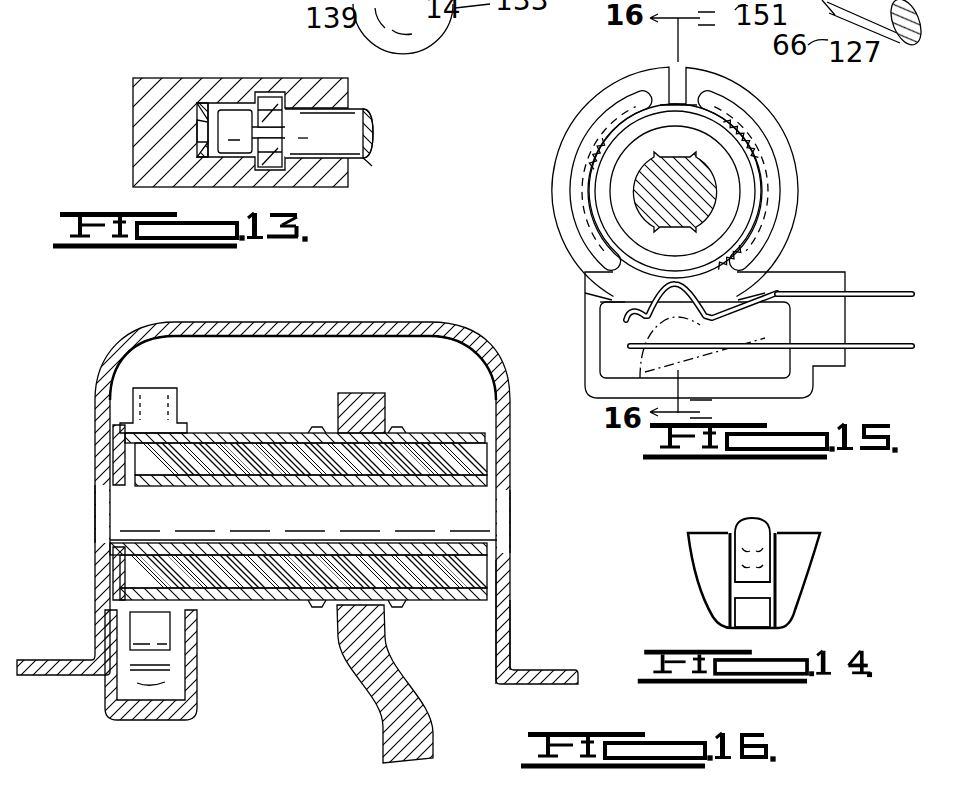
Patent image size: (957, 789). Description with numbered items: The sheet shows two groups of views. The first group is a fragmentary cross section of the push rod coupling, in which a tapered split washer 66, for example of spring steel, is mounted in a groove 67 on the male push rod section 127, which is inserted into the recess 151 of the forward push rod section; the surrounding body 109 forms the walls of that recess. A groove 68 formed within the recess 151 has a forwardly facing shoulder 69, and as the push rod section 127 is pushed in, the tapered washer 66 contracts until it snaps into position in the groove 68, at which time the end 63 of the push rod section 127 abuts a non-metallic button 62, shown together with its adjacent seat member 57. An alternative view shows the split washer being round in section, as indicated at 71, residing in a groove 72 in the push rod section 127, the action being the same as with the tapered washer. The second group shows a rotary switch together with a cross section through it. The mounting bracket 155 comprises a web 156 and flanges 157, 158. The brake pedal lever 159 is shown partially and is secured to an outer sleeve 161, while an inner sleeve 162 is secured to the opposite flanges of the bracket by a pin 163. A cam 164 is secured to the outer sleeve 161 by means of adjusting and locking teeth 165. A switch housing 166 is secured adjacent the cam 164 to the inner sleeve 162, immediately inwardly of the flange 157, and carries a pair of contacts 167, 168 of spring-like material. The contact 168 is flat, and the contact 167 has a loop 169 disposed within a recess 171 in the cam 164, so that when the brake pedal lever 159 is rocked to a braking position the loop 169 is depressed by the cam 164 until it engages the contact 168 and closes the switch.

In FIG. 13, the block 109 is at (140, 93).
In FIG. 13, the male push rod section 127 is at (345, 125).
In FIG. 14, the male push rod section 127 is at (800, 545).
In FIG. 13, the groove 67 is at (324, 142).
In FIG. 13, the sleeve 57 is at (238, 150).
In FIG. 13, the non-metallic button 62 is at (200, 130).
In FIG. 13, the end of push rod section 63 is at (200, 115).
In FIG. 13, the groove 68 is at (264, 100).
In FIG. 13, the forwardly facing shoulder 69 is at (283, 120).
In FIG. 13, the tapered split washer 66 is at (268, 172).
In FIG. 13, the recess 151 is at (367, 160).
In FIG. 15, the cam 164 is at (553, 205).
In FIG. 16, the cam 164 is at (180, 400).
In FIG. 15, the adjusting and locking teeth 165 is at (738, 135).
In FIG. 15, the switch housing 166 is at (590, 347).
In FIG. 16, the switch housing 166 is at (190, 696).
In FIG. 15, the loop 169 is at (600, 313).
In FIG. 15, the recess 171 is at (705, 285).
In FIG. 15, the contact 167 is at (855, 291).
In FIG. 15, the contact 168 is at (866, 342).
In FIG. 16, the web 156 is at (335, 322).
In FIG. 16, the flange 157 is at (95, 567).
In FIG. 16, the outer sleeve 161 is at (266, 433).
In FIG. 16, the inner sleeve 162 is at (458, 485).
In FIG. 16, the pin 163 is at (100, 498).
In FIG. 16, the mounting bracket 155 is at (528, 590).
In FIG. 16, the flange 158 is at (505, 621).
In FIG. 16, the brake pedal lever 159 is at (392, 718).
In FIG. 14, the split washer 71 is at (757, 526).
In FIG. 14, the groove 72 is at (735, 586).